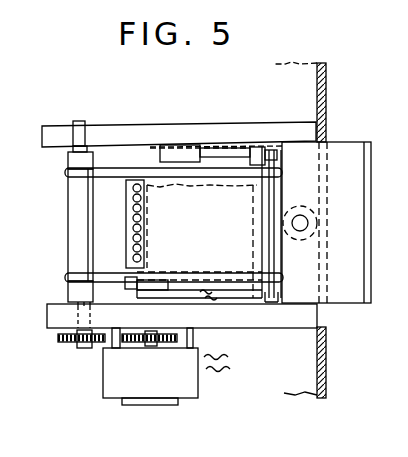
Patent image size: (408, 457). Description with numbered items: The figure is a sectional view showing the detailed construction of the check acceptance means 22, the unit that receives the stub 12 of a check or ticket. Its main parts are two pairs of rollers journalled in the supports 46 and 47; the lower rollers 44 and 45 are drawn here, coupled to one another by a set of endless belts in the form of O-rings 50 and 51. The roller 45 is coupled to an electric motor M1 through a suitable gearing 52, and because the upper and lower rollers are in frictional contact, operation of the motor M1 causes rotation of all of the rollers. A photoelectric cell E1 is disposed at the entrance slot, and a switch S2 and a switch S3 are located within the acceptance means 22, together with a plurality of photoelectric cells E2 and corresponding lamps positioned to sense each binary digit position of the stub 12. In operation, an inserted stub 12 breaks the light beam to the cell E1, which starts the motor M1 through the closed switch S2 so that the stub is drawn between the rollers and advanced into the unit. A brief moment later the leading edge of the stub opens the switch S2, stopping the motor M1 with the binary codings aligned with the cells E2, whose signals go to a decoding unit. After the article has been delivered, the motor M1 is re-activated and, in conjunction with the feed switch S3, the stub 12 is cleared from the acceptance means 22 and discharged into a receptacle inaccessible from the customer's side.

The stub 12 is at (188, 245).
The check acceptance means 22 is at (62, 228).
The lower roller 44 is at (257, 201).
The lower roller 45 is at (72, 193).
The support 46 is at (53, 133).
The support 47 is at (60, 311).
The O-ring 50 is at (224, 171).
The O-ring 51 is at (108, 283).
The gearing 52 is at (67, 342).
The photoelectric cell E1 is at (300, 231).
The photoelectric cells E2 is at (133, 223).
The feed switch S3 is at (182, 155).
The switch S2 is at (188, 293).
The electric motor M1 is at (167, 385).